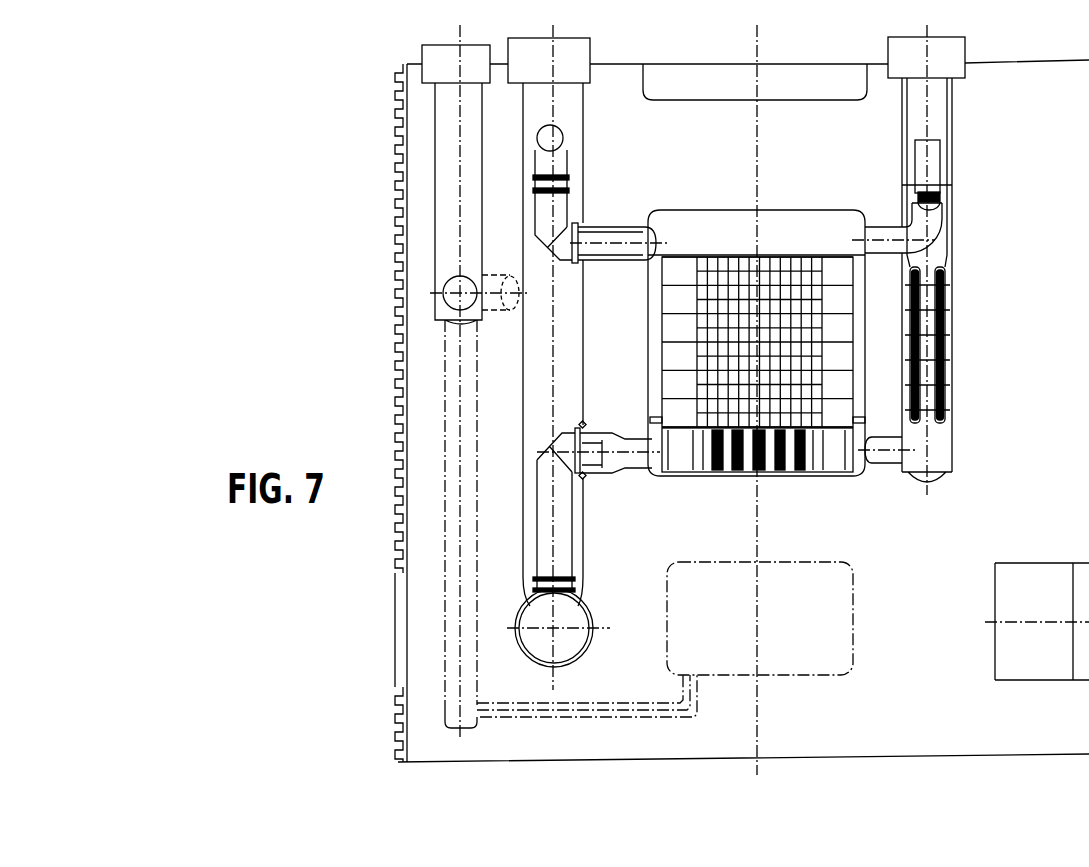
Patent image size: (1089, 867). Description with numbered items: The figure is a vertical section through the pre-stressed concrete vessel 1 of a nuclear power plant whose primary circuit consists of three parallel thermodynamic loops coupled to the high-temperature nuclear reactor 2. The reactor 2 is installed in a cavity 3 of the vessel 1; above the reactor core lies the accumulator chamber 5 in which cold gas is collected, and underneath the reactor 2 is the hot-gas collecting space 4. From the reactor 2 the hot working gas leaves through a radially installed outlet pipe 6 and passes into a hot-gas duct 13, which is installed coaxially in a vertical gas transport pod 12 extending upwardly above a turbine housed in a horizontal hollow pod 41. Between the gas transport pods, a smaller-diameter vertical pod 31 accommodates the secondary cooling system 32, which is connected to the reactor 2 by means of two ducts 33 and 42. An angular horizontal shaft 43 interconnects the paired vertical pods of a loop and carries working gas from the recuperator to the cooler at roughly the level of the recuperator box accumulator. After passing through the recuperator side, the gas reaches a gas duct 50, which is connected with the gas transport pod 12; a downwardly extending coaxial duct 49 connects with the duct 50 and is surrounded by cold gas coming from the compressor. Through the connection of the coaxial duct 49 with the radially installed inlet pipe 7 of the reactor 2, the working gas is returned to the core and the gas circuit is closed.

The pre-stressed concrete vessel 1 is at (1020, 136).
The nuclear reactor 2 is at (813, 310).
The cavity 3 is at (862, 328).
The hot-gas collecting space 4 is at (683, 452).
The accumulator chamber 5 is at (800, 220).
The outlet pipe 6 is at (633, 452).
The inlet pipe 7 is at (597, 240).
The vertical gas pod 12 is at (572, 380).
The hot-gas duct 13 is at (562, 525).
The vertical pod 31 is at (950, 377).
The secondary cooling system 32 is at (943, 392).
The duct 33 is at (885, 237).
The horizontal hollow pod 41 is at (592, 625).
The duct 42 is at (887, 450).
The angular horizontal shaft 43 is at (493, 298).
The coaxial duct 49 is at (560, 205).
The gas duct 50 is at (560, 133).